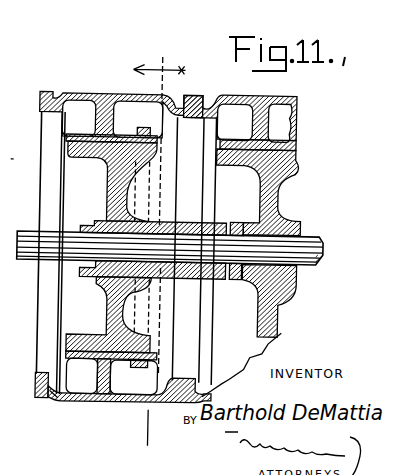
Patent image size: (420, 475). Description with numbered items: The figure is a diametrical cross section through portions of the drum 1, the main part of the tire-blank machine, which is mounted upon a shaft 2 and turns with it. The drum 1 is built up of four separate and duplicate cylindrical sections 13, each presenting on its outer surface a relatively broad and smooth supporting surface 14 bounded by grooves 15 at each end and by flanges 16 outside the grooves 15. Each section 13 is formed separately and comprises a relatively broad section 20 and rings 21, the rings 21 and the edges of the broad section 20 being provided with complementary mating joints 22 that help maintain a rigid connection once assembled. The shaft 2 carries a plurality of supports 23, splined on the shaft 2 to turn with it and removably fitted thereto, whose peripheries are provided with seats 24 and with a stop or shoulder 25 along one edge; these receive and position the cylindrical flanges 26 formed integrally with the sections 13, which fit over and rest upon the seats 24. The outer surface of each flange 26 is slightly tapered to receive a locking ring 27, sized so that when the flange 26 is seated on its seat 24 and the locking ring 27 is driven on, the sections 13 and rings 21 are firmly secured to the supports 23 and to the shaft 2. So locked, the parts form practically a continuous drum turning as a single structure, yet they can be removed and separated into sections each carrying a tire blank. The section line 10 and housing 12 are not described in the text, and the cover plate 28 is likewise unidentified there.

The drum 1 is at (26, 241).
The shaft 2 is at (40, 236).
The section line 10 is at (156, 251).
The housing 12 is at (7, 158).
The cylindrical sections 13 is at (290, 118).
The supporting surface 14 is at (97, 404).
The grooves 15 is at (53, 407).
The flanges 16 is at (37, 401).
The broad sections 20 is at (157, 120).
The rings 21 is at (126, 253).
The complementary mating joints 22 is at (183, 97).
The supports 23 is at (105, 203).
The seats 24 is at (95, 162).
The stop or shoulder 25 is at (84, 140).
The cylindrical flanges 26 is at (129, 142).
The locking rings 27 is at (150, 364).
The cover plate 28 is at (103, 94).